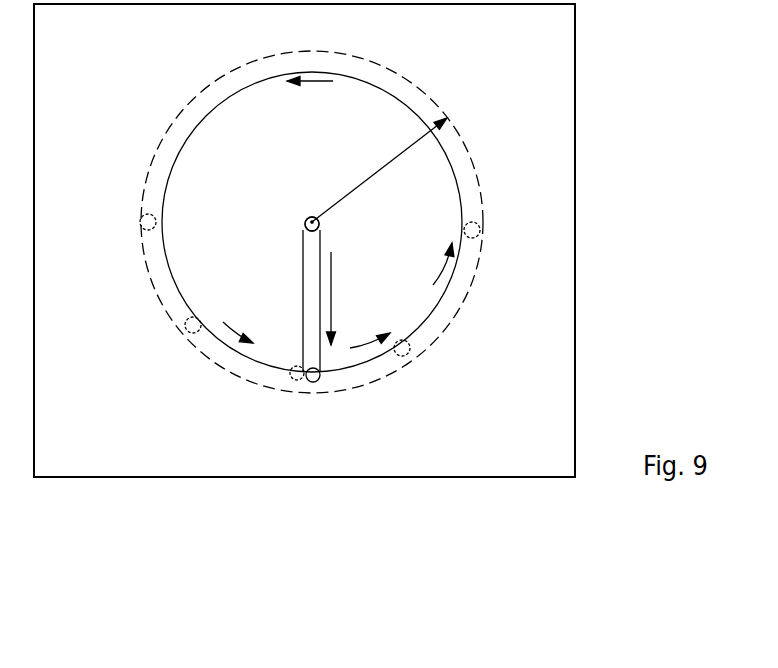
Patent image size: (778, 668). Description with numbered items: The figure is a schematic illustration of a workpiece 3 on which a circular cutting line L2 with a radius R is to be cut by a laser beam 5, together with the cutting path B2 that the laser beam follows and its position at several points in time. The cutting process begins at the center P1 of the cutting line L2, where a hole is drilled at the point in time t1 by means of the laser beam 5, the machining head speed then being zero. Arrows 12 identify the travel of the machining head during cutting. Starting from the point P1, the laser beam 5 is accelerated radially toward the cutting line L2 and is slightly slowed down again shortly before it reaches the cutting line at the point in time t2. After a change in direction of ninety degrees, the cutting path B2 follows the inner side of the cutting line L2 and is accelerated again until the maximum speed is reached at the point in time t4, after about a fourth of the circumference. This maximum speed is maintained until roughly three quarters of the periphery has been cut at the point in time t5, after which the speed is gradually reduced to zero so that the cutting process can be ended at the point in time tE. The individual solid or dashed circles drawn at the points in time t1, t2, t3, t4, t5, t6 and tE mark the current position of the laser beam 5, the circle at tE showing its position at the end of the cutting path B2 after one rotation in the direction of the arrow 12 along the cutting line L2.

The workpiece 3 is at (563, 90).
The laser beam 5 is at (315, 217).
The arrows 12 is at (308, 80).
The cutting line L2 is at (408, 80).
The cutting path B2 is at (315, 257).
The radius R is at (400, 153).
The center P1 is at (310, 220).
The point in time t1 is at (322, 225).
The point in time t2 is at (316, 386).
The point in time t3 is at (407, 353).
The point in time t4 is at (480, 230).
The point in time t5 is at (138, 222).
The point in time t6 is at (185, 333).
The point in time tE is at (297, 387).